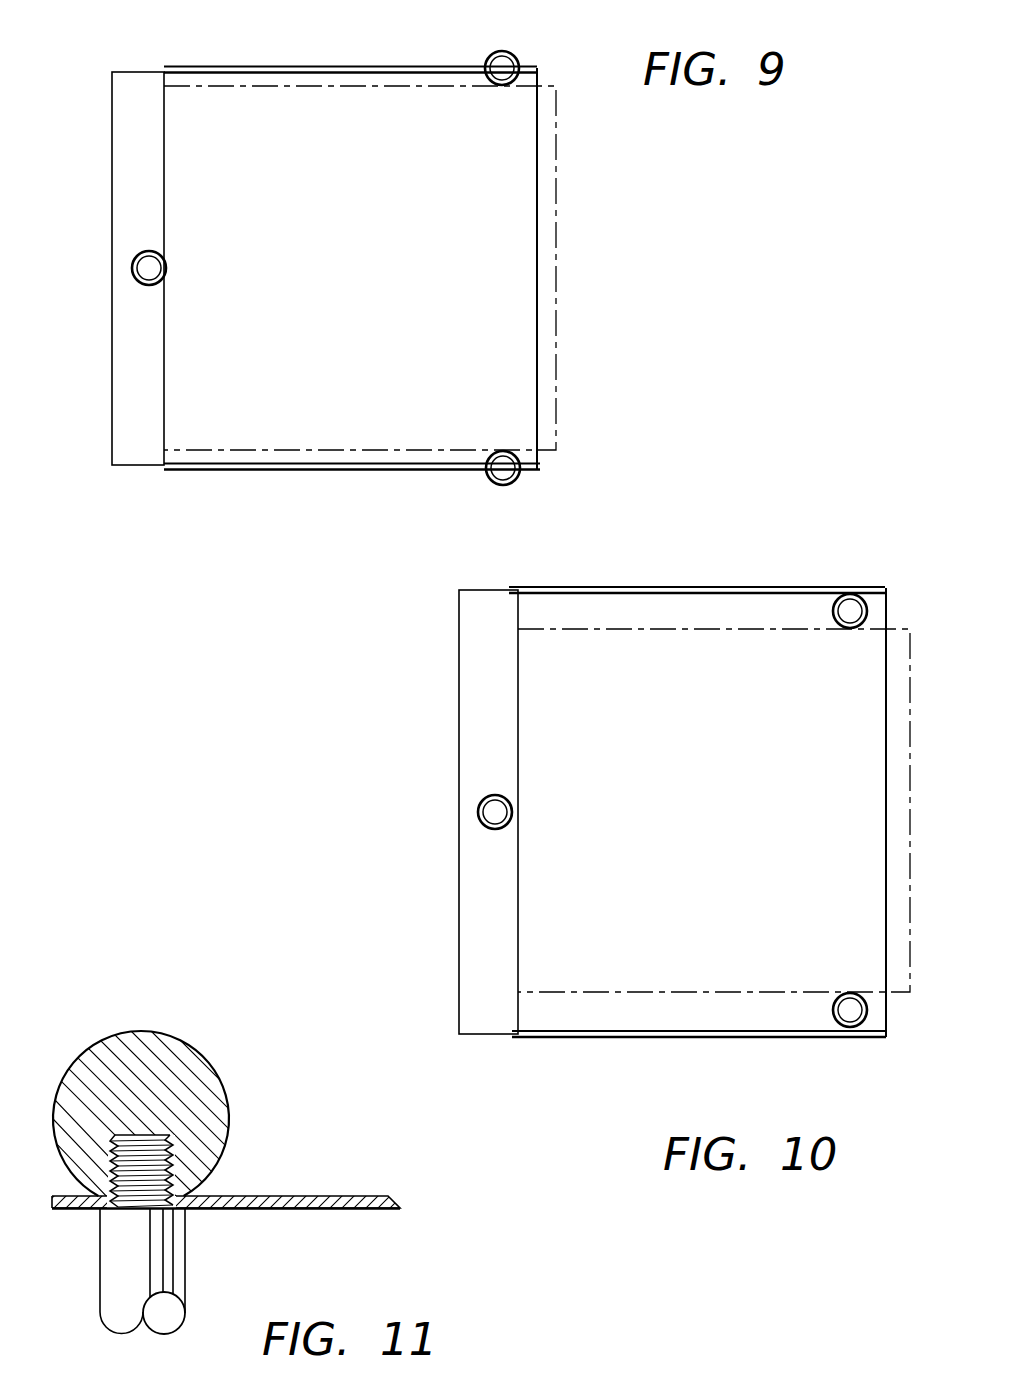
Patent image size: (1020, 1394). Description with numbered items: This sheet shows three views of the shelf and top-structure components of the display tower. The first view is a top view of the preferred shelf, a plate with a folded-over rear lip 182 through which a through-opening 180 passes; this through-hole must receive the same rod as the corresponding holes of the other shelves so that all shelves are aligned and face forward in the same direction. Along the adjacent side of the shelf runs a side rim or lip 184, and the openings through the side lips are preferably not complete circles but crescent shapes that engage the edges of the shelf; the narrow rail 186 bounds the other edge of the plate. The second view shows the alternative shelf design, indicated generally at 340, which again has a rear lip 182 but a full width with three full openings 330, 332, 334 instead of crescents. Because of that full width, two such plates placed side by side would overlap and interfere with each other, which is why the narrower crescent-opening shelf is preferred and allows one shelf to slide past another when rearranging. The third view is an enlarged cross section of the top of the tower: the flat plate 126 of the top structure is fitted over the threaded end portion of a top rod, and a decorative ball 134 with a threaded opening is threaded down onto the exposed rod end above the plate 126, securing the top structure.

In FIG. 9, the through-opening 180 is at (146, 269).
In FIG. 9, the rear lip 182 is at (131, 453).
In FIG. 10, the rear lip 182 is at (478, 925).
In FIG. 9, the side rim 184 is at (383, 470).
In FIG. 9, the upper rail 186 is at (418, 66).
In FIG. 10, the full opening 330 is at (490, 815).
In FIG. 10, the full opening 332 is at (846, 608).
In FIG. 10, the full opening 334 is at (853, 1012).
In FIG. 10, the full-width shelf embodiment 340 is at (692, 570).
In FIG. 11, the decorative ball 134 is at (218, 1100).
In FIG. 11, the flat plate 126 is at (388, 1196).